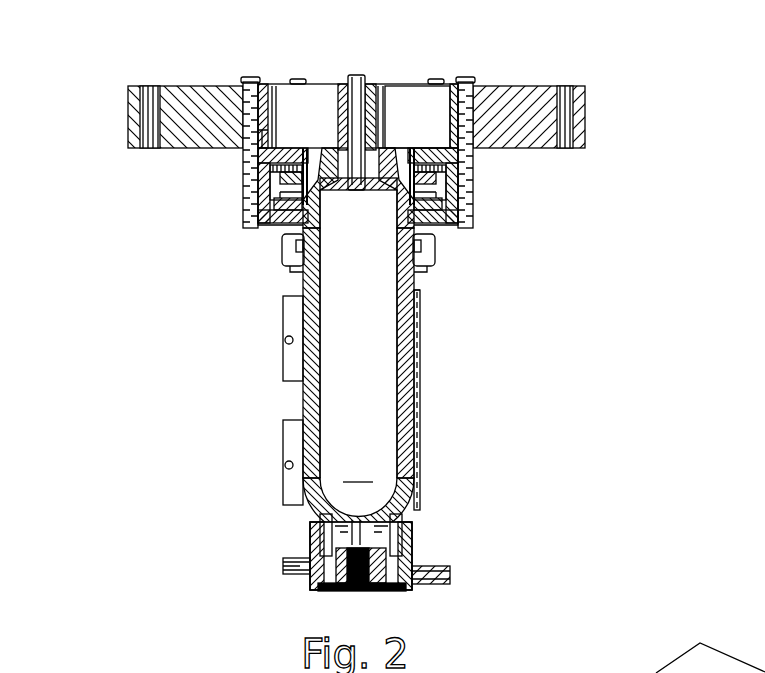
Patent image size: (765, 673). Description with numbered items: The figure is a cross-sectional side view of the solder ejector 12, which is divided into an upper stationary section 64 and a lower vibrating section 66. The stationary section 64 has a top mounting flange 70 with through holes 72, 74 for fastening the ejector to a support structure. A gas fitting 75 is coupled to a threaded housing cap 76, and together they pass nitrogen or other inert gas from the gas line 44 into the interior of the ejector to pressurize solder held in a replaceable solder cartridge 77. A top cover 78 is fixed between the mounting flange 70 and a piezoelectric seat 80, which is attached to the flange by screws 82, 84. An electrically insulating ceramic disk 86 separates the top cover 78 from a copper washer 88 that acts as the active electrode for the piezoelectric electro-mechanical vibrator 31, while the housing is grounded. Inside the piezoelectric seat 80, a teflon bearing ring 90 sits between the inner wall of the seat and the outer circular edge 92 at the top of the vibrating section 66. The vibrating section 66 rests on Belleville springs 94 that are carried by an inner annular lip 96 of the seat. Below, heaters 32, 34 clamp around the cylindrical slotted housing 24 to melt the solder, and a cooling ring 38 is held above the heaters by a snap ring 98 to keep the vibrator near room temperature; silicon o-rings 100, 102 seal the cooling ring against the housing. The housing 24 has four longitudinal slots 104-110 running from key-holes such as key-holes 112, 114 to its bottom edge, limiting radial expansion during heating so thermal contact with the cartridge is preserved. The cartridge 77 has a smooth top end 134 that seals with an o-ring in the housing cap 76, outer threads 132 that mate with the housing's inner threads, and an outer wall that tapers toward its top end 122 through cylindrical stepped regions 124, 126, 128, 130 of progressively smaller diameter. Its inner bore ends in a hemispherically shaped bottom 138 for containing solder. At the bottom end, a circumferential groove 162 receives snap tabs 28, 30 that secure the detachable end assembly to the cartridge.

The solder ejector 12 is at (640, 205).
The cylindrical slotted housing 24 is at (420, 406).
The snap tab 28 is at (310, 546).
The snap tab 30 is at (414, 538).
The electro-mechanical vibrator 31 is at (264, 196).
The heater 32 is at (283, 456).
The heater 34 is at (246, 338).
The cooling ring 38 is at (282, 262).
The gas line 44 is at (366, 82).
The upper stationary section 64 is at (122, 90).
The lower vibrating section 66 is at (168, 304).
The top mounting flange 70 is at (296, 92).
The through hole 72 is at (150, 86).
The through hole 74 is at (565, 86).
The gas fitting 75 is at (384, 98).
The threaded housing cap 76 is at (322, 196).
The replaceable solder cartridge 77 is at (420, 326).
The top cover 78 is at (421, 150).
The piezoelectric seat 80 is at (252, 232).
The screw 82 is at (248, 78).
The screw 84 is at (465, 78).
The electrically insulating ceramic disk 86 is at (470, 158).
The copper washer 88 is at (470, 190).
The teflon bearing ring 90 is at (266, 170).
The outer circular edge 92 is at (456, 200).
The Belleville springs 94 is at (456, 226).
The inner annular lip 96 is at (430, 236).
The snap ring 98 is at (418, 262).
The silicon o-ring 100 is at (303, 258).
The silicon o-ring 102 is at (320, 290).
The longitudinal slots 104-110 is at (287, 341).
The tube interior 105 is at (398, 360).
The key-hole 112 is at (302, 282).
The key-hole 114 is at (418, 289).
The top end 122 is at (322, 258).
The cylindrical stepped region 124 is at (420, 477).
The cylindrical stepped region 126 is at (420, 433).
The cylindrical stepped region 128 is at (398, 400).
The cylindrical stepped region 130 is at (400, 320).
The outer threads 132 is at (396, 242).
The top end 134 is at (396, 205).
The hemispherically shaped bottom 138 is at (418, 376).
The circumferential groove 162 is at (414, 518).